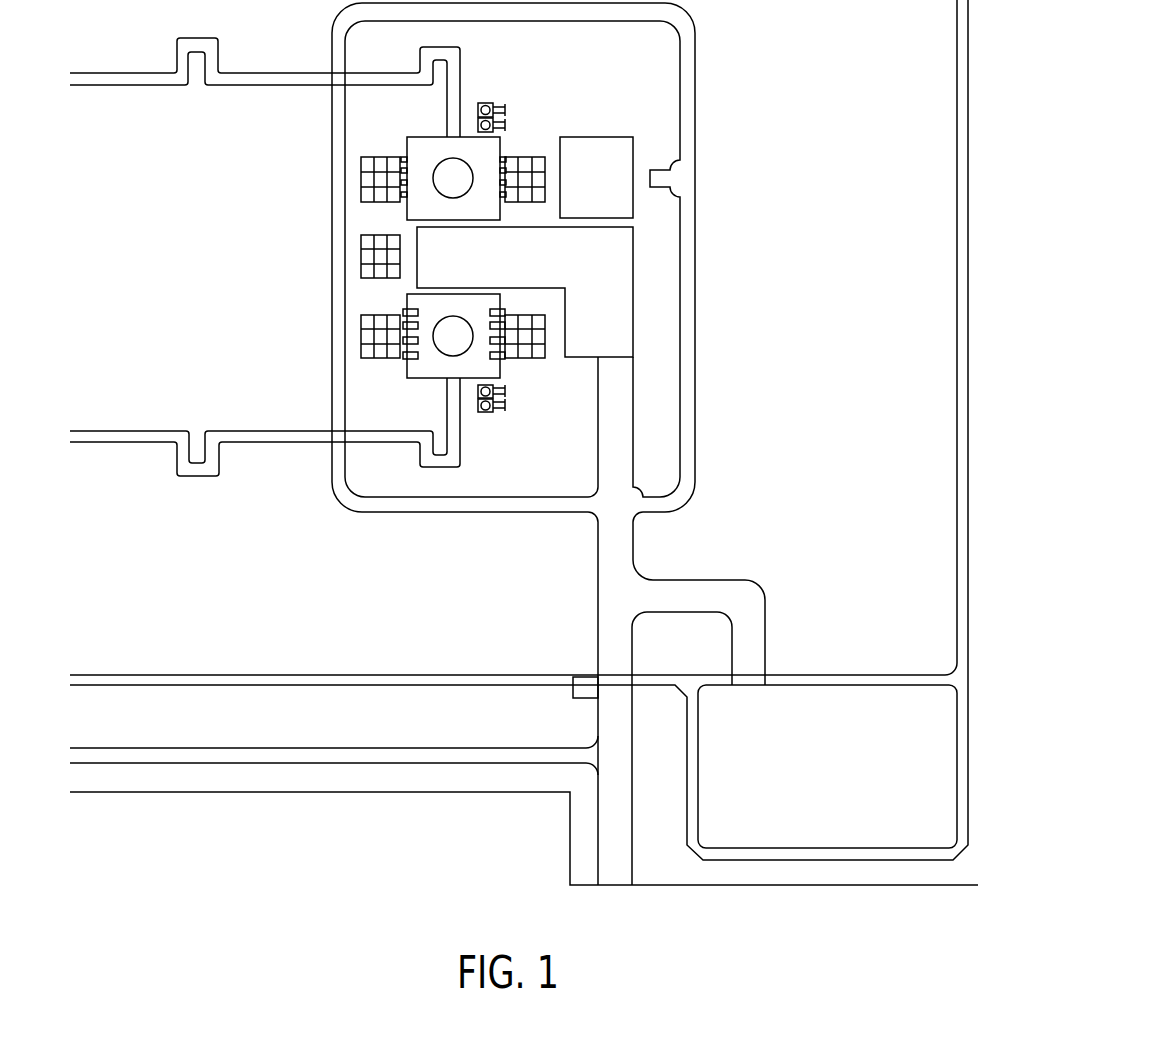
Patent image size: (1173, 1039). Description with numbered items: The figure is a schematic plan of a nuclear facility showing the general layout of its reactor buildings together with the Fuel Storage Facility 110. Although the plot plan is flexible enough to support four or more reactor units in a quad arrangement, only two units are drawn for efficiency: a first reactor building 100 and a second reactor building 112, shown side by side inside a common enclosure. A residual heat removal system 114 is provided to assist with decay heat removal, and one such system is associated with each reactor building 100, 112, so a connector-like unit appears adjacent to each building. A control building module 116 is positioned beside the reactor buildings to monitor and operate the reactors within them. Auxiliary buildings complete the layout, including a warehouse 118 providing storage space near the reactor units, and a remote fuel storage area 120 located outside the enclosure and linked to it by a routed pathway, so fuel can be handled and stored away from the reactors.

The first reactor building 100 is at (427, 363).
The Fuel Storage Facility 110 is at (603, 323).
The second reactor building 112 is at (440, 163).
The residual heat removal (RHR) system 114 is at (497, 93).
The control building module 116 is at (367, 228).
The warehouse 118 is at (606, 172).
The remote fuel storage area 120 is at (813, 730).